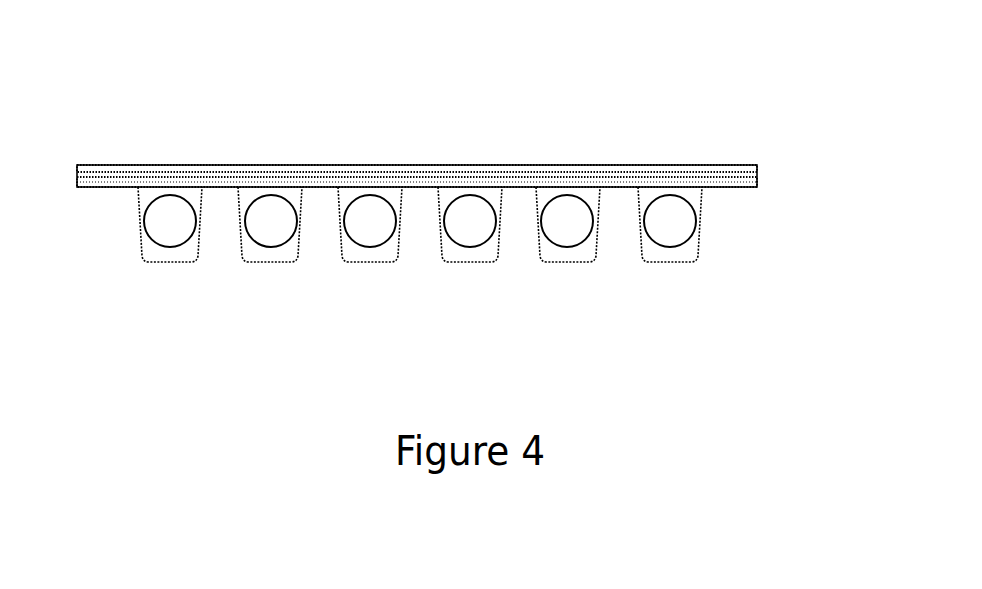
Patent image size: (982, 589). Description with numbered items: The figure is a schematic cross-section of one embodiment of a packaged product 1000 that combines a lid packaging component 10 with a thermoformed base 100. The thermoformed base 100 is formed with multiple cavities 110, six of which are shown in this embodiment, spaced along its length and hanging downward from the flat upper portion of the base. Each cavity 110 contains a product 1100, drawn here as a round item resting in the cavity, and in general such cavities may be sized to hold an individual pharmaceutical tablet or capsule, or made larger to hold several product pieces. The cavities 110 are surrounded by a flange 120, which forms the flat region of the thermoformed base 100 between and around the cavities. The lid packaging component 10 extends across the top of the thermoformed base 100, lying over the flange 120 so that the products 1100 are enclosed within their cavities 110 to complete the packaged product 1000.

The packaged product 1000 is at (618, 68).
The lid packaging component 10 is at (162, 165).
The flange 120 is at (728, 165).
The thermoformed base 100 is at (115, 190).
The cavities 110 is at (290, 258).
The product 1100 is at (673, 225).